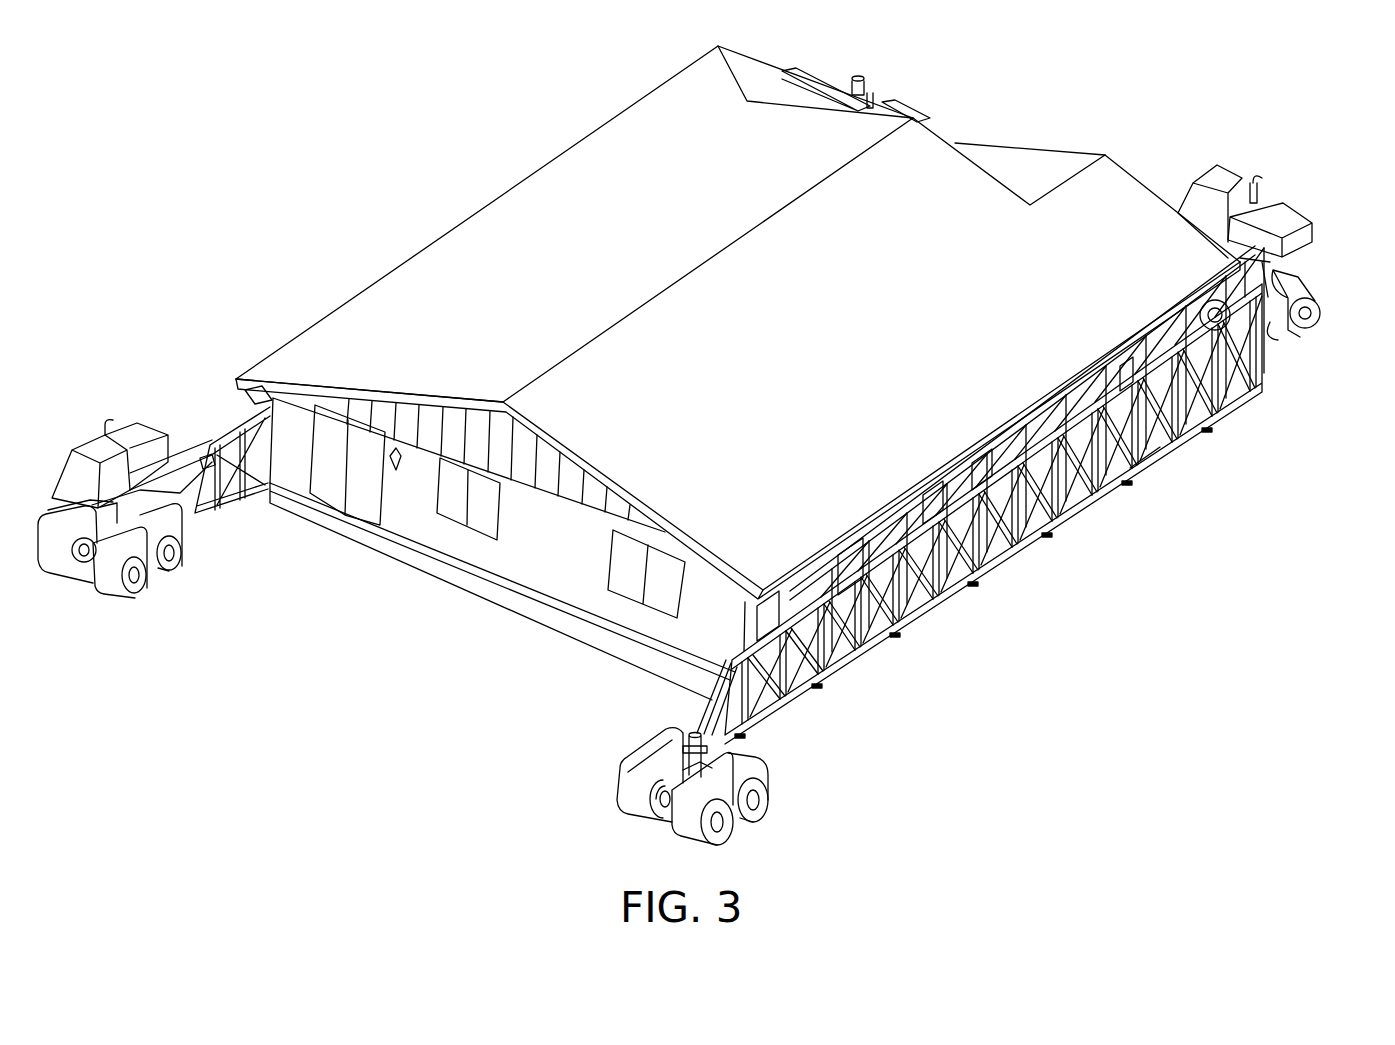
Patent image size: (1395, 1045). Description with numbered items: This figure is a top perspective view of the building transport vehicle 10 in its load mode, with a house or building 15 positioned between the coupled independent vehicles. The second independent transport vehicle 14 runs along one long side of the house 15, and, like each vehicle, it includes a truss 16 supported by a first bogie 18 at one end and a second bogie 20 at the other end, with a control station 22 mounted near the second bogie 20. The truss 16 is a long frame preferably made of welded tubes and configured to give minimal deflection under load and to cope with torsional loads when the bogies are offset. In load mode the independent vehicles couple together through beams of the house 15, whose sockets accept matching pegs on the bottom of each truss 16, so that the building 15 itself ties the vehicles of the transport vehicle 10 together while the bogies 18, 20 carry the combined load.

The building transport vehicle 10 is at (1349, 212).
The second independent transport vehicle 14 is at (1047, 533).
The house or building 15 is at (1130, 172).
The truss 16 is at (1148, 465).
The first bogie 18 is at (767, 787).
The second bogie 20 is at (1308, 332).
The control station 22 is at (1280, 213).